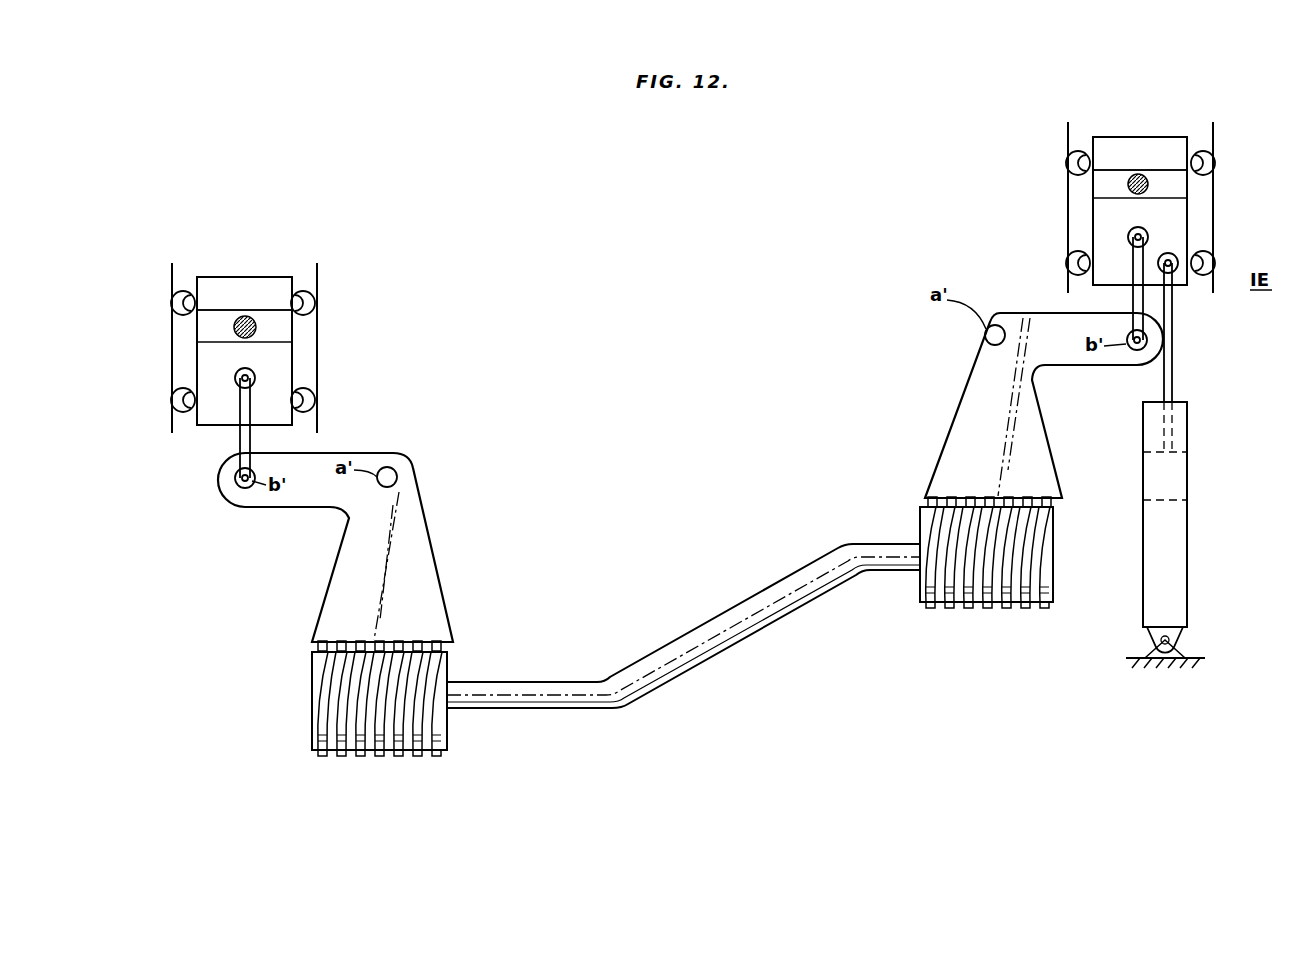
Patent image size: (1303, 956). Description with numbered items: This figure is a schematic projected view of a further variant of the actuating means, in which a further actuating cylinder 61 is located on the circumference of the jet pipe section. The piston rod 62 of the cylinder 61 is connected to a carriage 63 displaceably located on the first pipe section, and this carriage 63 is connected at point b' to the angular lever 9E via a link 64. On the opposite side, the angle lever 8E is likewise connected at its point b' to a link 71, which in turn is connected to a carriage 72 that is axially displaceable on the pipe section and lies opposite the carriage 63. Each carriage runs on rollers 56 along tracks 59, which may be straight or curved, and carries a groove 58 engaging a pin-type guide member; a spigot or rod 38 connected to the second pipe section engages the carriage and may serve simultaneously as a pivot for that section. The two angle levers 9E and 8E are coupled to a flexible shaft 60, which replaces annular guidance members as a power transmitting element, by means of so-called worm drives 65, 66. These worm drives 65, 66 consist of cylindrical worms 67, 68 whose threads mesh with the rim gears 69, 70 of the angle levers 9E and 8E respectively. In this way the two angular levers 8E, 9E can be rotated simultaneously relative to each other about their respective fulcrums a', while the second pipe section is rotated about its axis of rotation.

The angle lever 8E is at (410, 562).
The angle lever 9E is at (968, 420).
The spigot or rod 38 is at (251, 318).
The rollers 56 is at (315, 392).
The groove 58 is at (206, 324).
The tracks 59 is at (317, 272).
The flexible shaft 60 is at (693, 632).
The actuating cylinder 61 is at (1128, 598).
The piston rod 62 is at (1174, 380).
The carriage 63 is at (1182, 190).
The link 64 is at (1130, 300).
The worm drive 65 is at (975, 619).
The worm drive 66 is at (386, 757).
The cylindrical worm 67 is at (1043, 604).
The cylindrical worm 68 is at (433, 752).
The rim gear 69 is at (948, 497).
The rim gear 70 is at (340, 640).
The link 71 is at (238, 443).
The carriage 72 is at (222, 338).